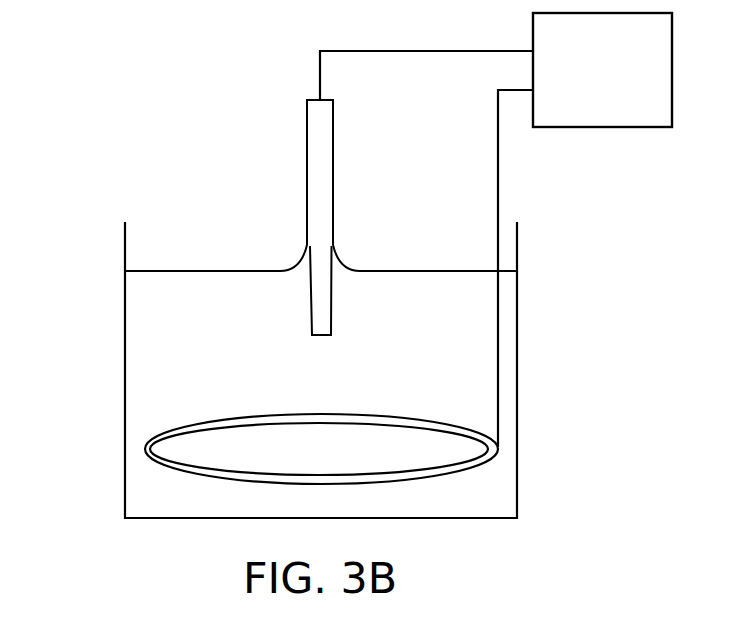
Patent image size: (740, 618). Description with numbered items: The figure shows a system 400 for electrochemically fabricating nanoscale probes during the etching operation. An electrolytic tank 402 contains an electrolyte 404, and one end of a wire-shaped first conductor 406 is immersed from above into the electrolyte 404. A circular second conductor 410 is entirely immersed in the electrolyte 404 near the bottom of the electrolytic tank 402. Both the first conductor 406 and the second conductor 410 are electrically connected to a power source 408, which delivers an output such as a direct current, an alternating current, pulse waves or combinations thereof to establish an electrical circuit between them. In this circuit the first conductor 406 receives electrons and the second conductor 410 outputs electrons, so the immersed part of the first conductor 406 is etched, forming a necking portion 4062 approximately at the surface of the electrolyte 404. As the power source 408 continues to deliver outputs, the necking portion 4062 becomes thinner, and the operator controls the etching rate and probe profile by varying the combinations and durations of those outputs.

The system 400 is at (79, 79).
The electrolytic tank 402 is at (125, 350).
The electrolyte 404 is at (138, 494).
The first conductor 406 is at (279, 217).
The necking portion 4062 is at (322, 265).
The power source 408 is at (602, 128).
The second conductor 410 is at (148, 448).